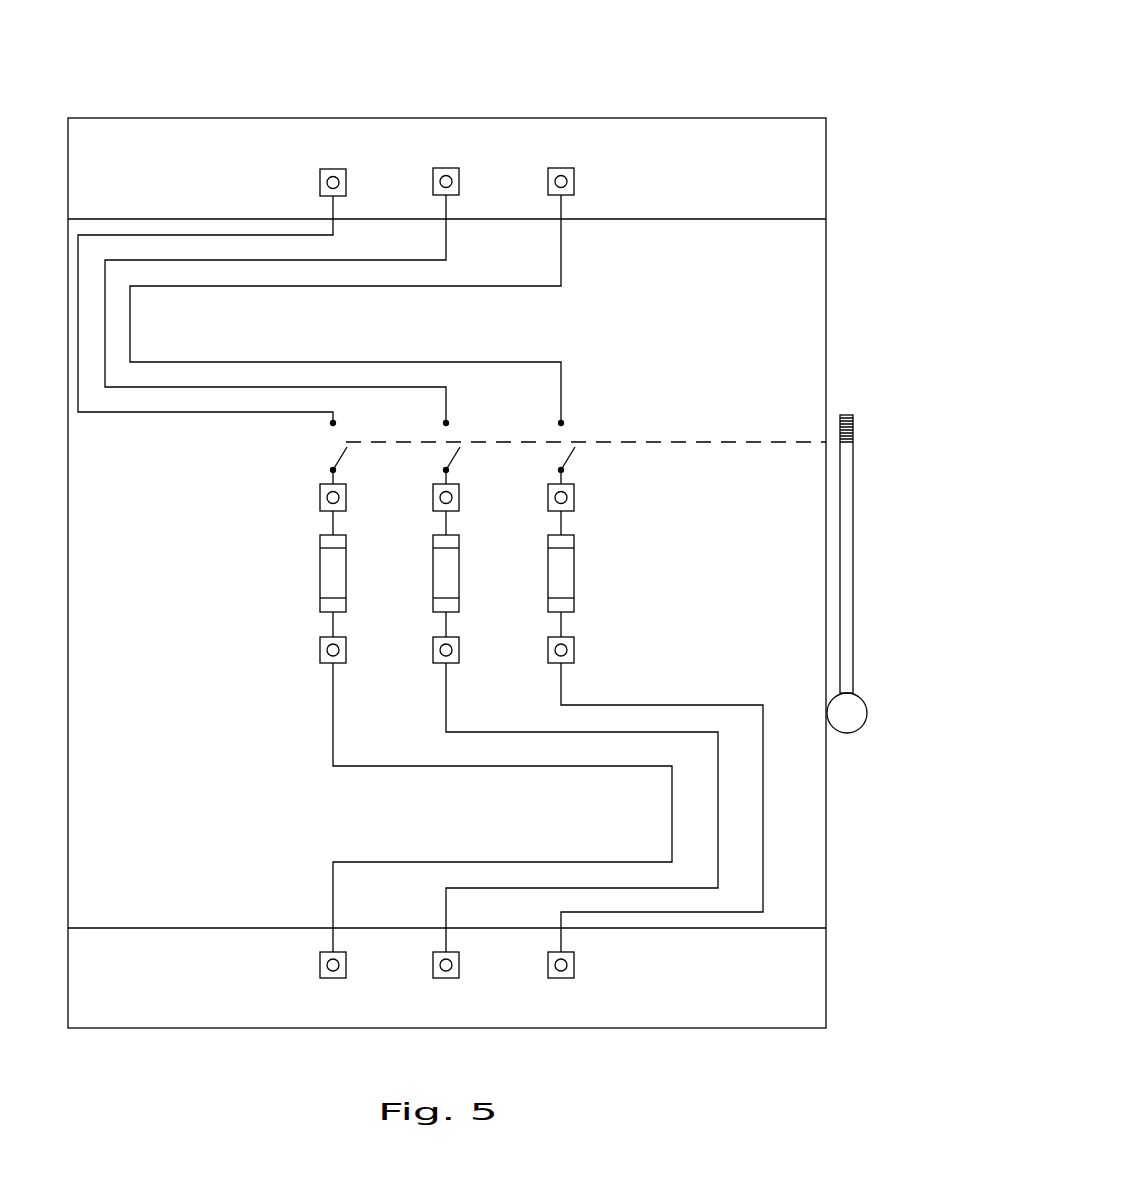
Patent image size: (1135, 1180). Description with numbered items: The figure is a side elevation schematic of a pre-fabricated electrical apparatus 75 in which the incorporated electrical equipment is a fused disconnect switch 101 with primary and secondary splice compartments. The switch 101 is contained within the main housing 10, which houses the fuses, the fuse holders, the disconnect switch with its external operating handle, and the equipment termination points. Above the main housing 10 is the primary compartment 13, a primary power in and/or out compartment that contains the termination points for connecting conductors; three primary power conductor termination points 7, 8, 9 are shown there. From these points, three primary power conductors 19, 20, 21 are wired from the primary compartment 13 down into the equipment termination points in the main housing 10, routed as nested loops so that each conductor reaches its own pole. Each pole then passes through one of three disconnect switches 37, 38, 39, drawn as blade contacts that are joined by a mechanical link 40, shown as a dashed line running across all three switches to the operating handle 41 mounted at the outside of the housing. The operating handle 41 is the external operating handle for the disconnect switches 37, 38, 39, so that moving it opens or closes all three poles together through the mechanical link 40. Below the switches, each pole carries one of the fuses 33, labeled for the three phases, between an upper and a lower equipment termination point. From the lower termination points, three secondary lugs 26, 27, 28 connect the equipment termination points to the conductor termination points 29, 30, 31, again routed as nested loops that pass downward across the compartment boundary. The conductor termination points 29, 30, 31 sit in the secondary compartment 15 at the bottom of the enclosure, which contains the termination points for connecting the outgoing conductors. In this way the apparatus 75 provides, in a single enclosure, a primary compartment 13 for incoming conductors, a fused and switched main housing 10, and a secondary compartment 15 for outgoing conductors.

The primary power conductor termination point 7 is at (320, 172).
The primary power conductor termination point 8 is at (433, 184).
The primary power conductor termination point 9 is at (548, 187).
The main housing 10 is at (151, 678).
The primary compartment 13 is at (132, 193).
The secondary compartment 15 is at (156, 996).
The primary power conductor 19 is at (334, 237).
The primary power conductor 20 is at (447, 242).
The primary power conductor 21 is at (508, 287).
The secondary lug 26 is at (333, 893).
The secondary lug 27 is at (446, 904).
The secondary lug 28 is at (600, 912).
The conductor termination point 29 is at (333, 978).
The conductor termination point 30 is at (446, 978).
The conductor termination point 31 is at (561, 978).
The fuses 33 is at (347, 565).
The disconnect switch 37 is at (335, 457).
The disconnect switch 38 is at (445, 442).
The disconnect switch 39 is at (563, 450).
The mechanical link 40 is at (586, 441).
The operating handle 41 is at (845, 525).
The pre-fabricated electrical apparatus 75 is at (798, 86).
The fused disconnect switch 101 is at (826, 251).